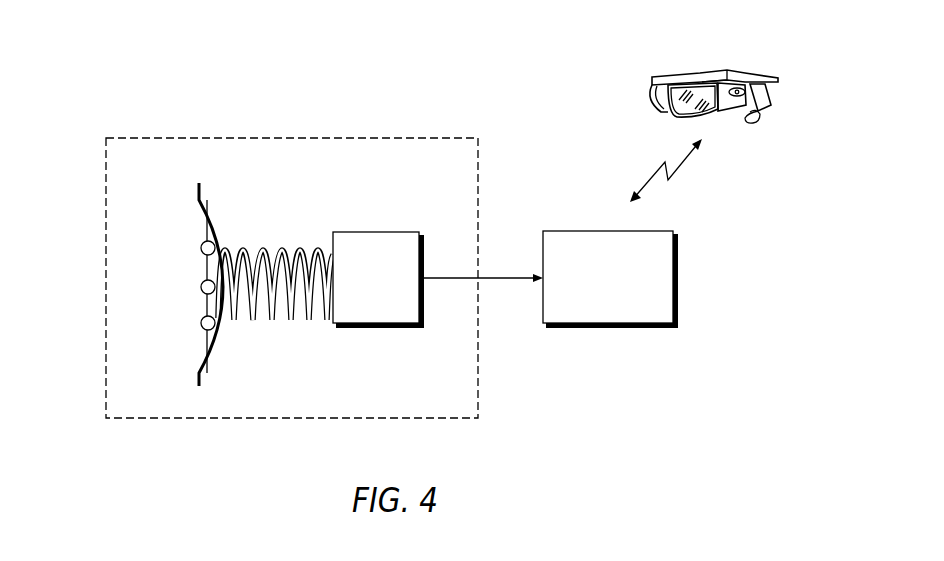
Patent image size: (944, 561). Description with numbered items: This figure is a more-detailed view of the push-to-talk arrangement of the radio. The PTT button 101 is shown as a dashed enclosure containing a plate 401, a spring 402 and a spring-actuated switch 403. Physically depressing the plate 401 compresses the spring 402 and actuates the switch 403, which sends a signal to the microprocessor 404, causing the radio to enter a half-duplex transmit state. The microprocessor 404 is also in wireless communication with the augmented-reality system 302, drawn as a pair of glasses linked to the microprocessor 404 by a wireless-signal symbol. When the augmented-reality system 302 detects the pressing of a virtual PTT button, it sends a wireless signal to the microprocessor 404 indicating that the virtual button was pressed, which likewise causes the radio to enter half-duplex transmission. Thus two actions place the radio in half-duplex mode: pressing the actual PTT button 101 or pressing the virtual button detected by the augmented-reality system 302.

The PTT button 101 is at (106, 299).
The augmented-reality system 302 is at (727, 56).
The plate 401 is at (207, 303).
The spring 402 is at (263, 250).
The spring-actuated switch 403 is at (377, 232).
The microprocessor 404 is at (675, 279).